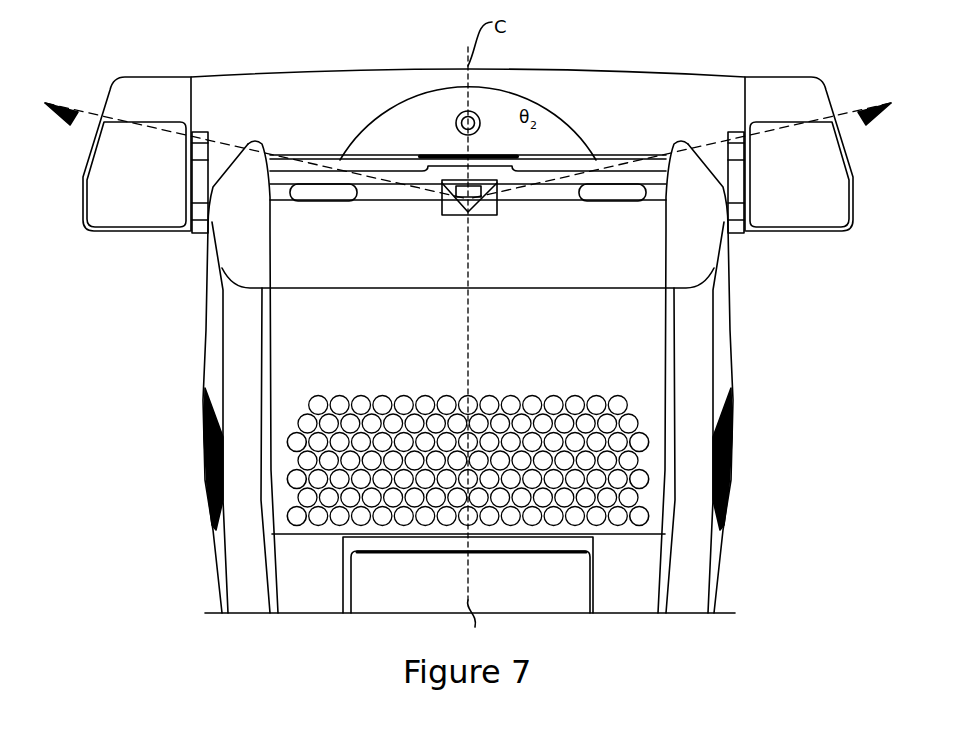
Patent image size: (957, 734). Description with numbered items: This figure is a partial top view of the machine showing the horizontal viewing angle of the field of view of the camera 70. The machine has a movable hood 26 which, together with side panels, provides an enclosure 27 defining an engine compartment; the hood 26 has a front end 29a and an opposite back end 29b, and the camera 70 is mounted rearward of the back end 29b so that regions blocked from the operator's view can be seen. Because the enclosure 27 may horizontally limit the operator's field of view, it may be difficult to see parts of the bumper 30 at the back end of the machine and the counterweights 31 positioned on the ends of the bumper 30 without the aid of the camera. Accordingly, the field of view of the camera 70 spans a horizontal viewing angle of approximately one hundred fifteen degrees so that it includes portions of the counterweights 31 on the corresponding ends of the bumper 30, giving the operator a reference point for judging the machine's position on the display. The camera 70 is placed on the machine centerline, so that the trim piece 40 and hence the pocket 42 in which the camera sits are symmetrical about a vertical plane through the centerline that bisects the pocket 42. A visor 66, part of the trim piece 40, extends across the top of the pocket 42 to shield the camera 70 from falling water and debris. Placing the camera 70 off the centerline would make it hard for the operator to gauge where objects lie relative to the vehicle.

The bumper 30 is at (602, 82).
The counterweights 31 is at (101, 217).
The trim piece 40 is at (233, 257).
The pocket 42 is at (496, 198).
The visor 66 is at (440, 188).
The camera 70 is at (473, 205).
The hood 26 is at (650, 349).
The enclosure 27 is at (745, 423).
The front end of hood 29a is at (646, 616).
The back end of hood 29b is at (605, 288).